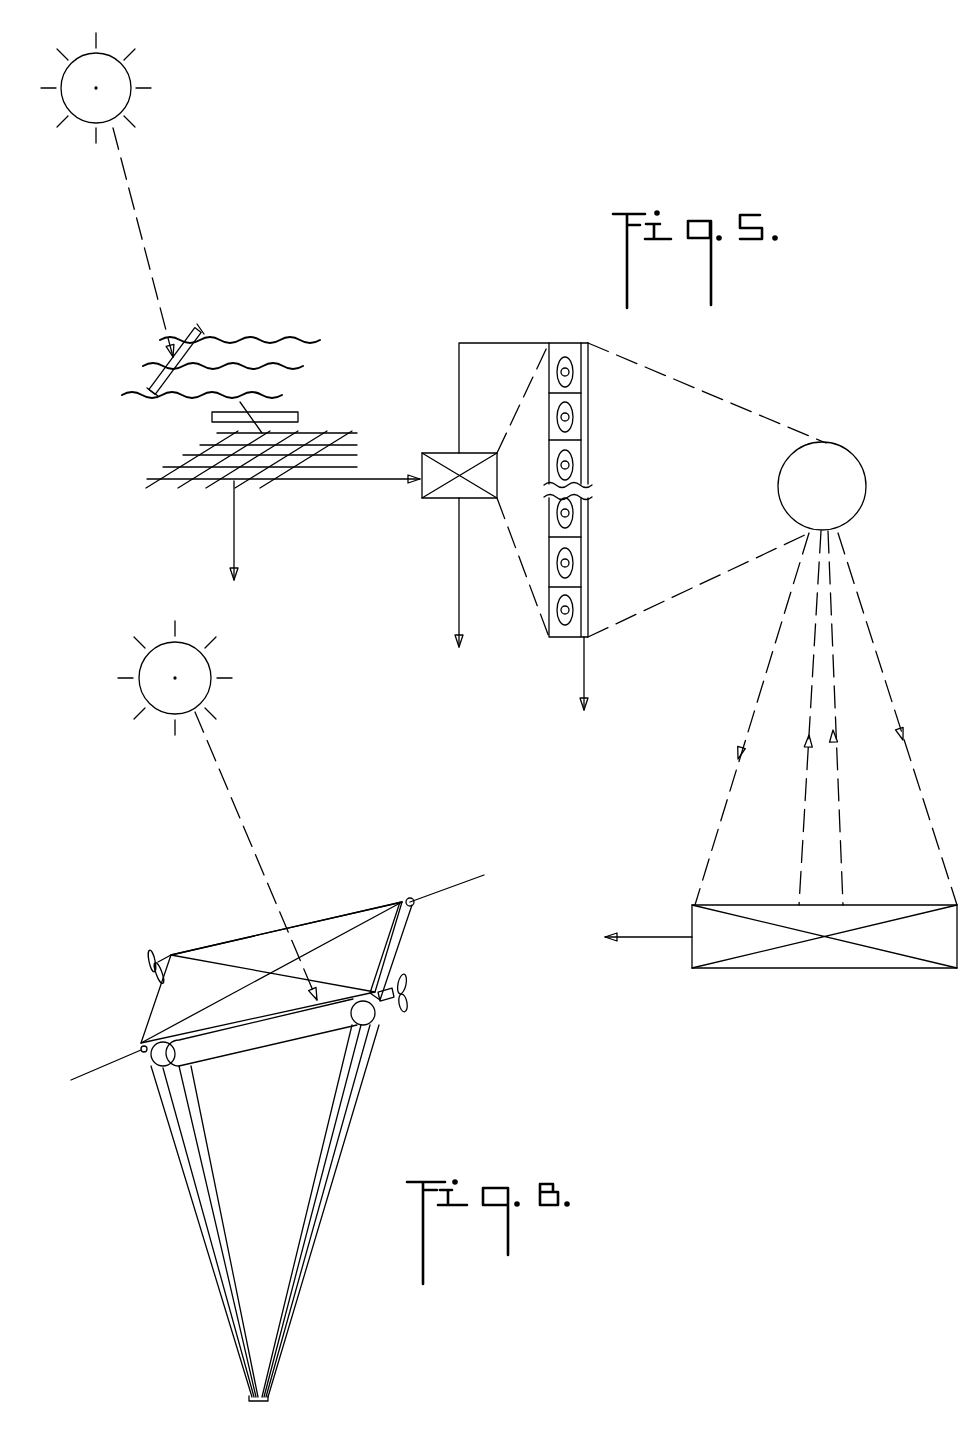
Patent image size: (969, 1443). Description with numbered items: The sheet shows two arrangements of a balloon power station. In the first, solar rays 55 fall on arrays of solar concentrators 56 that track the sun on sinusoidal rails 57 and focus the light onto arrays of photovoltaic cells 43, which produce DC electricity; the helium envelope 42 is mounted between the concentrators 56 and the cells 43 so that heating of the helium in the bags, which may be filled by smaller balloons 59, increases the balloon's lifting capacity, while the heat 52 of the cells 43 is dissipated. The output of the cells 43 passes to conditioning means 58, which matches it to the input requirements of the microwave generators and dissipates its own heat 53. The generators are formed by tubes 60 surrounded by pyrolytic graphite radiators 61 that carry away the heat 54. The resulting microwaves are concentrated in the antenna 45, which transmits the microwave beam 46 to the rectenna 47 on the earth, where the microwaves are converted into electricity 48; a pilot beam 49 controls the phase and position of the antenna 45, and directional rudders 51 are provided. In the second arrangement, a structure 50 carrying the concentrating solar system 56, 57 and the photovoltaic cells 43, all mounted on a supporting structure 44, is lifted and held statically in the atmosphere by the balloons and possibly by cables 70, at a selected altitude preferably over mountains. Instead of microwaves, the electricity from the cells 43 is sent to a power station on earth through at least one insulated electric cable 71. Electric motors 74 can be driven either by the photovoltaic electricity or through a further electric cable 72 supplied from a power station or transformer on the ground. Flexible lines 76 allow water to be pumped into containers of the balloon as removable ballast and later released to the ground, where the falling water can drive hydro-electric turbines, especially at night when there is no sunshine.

In FIG. 5, the envelope 42 is at (298, 413).
In FIG. 6, the envelope 42 is at (289, 1037).
In FIG. 5, the arrays of photovoltaic cells 43 is at (288, 489).
In FIG. 6, the arrays of photovoltaic cells 43 is at (225, 944).
In FIG. 6, the structure 44 is at (398, 950).
In FIG. 5, the antenna 45 is at (843, 456).
In FIG. 5, the microwave beam 46 is at (731, 779).
In FIG. 5, the rectenna 47 is at (804, 968).
In FIG. 5, the electricity 48 is at (650, 936).
In FIG. 5, the pilot beam 49 is at (838, 817).
In FIG. 6, the structure 50 is at (425, 972).
In FIG. 6, the directional rudders 51 is at (277, 962).
In FIG. 5, the heat 52 is at (234, 547).
In FIG. 5, the heat 53 is at (459, 612).
In FIG. 5, the heat 54 is at (584, 682).
In FIG. 5, the solar rays 55 is at (148, 238).
In FIG. 5, the solar concentrators 56 is at (205, 325).
In FIG. 6, the solar concentrators 56 is at (369, 906).
In FIG. 5, the sinusoidal rails 57 is at (260, 337).
In FIG. 6, the sinusoidal rails 57 is at (286, 928).
In FIG. 5, the conditioning means 58 is at (476, 452).
In FIG. 5, the smaller balloons 59 is at (585, 460).
In FIG. 5, the tubes 60 is at (570, 562).
In FIG. 5, the pyrolytic graphite radiators 61 is at (578, 573).
In FIG. 6, the cables 70 is at (208, 1159).
In FIG. 6, the insulated electric cable 71 is at (346, 1121).
In FIG. 6, the electric cable 72 is at (193, 1135).
In FIG. 6, the electric motors 74 is at (393, 1010).
In FIG. 6, the flexible lines 76 is at (177, 1113).